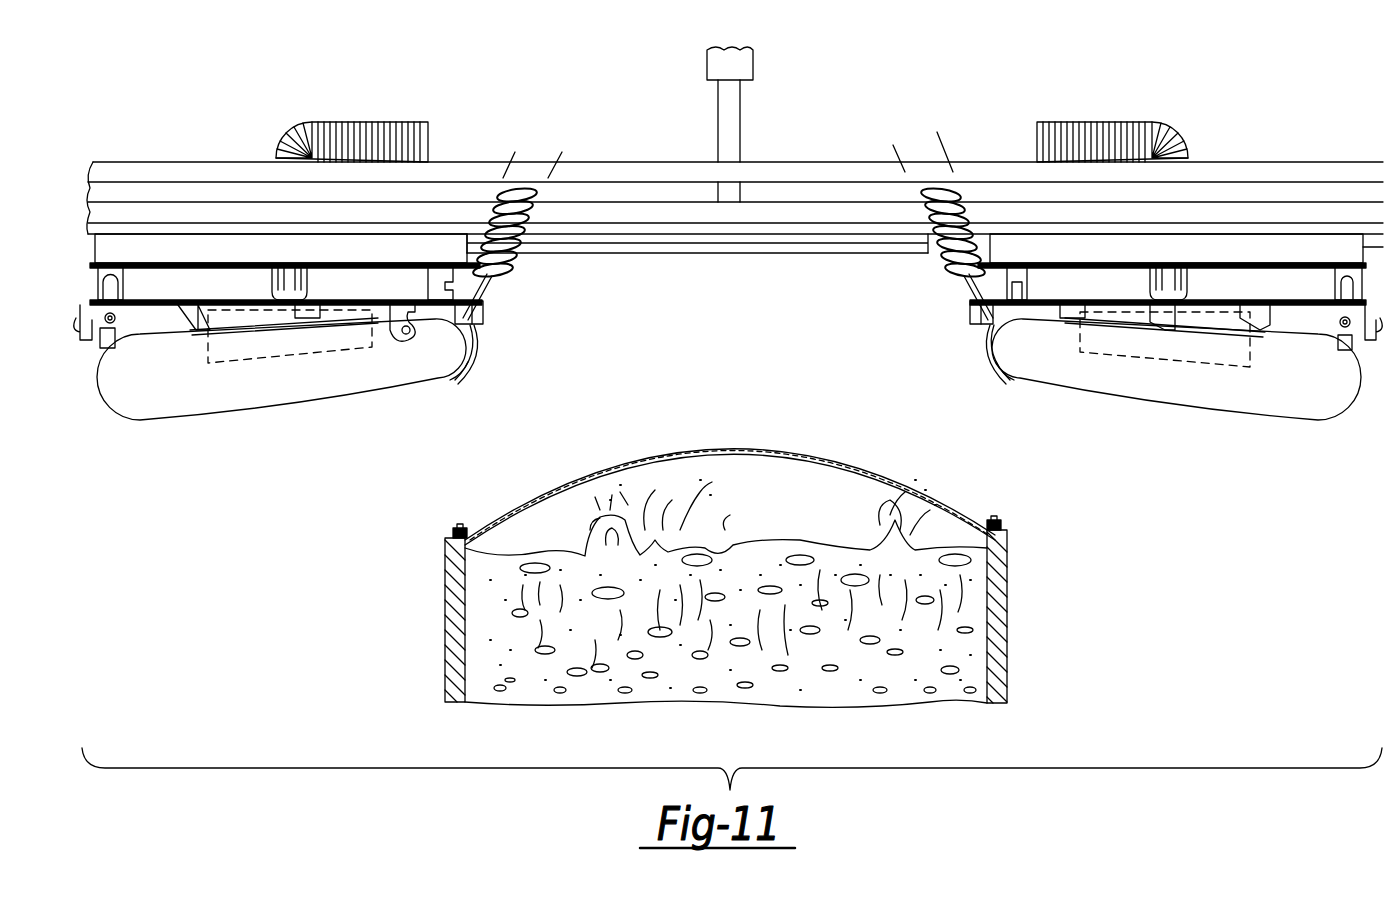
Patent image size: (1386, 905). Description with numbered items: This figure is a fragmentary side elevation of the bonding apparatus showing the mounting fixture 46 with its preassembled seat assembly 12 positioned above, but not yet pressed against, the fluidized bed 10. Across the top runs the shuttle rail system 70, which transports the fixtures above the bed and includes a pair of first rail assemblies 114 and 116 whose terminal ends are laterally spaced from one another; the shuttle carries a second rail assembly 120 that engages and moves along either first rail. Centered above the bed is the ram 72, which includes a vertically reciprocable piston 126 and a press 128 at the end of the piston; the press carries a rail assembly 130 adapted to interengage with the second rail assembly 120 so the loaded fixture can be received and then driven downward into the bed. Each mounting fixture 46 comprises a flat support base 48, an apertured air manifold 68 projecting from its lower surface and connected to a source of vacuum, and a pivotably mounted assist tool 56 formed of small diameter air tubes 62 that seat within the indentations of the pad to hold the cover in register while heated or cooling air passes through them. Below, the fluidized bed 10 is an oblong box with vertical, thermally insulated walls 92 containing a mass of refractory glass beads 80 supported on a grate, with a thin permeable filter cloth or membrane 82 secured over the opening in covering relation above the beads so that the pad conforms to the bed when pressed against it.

The fluidized bed 10 is at (724, 575).
The seat assembly 12 is at (233, 418).
The mounting fixture 46 is at (492, 312).
The flat support base 48 is at (484, 297).
The assist tool 56 is at (460, 382).
The air tubes 62 is at (466, 360).
The apertured air manifold 68 is at (280, 340).
The shuttle rail system 70 is at (213, 160).
The ram 72 is at (727, 66).
The refractory glass beads 80 is at (490, 590).
The filter cloth or membrane 82 is at (470, 538).
The thermally insulated walls 92 is at (462, 665).
The first rail assembly 114 is at (152, 234).
The first rail assembly 116 is at (1367, 237).
The second rail assembly 120 is at (437, 250).
The piston 126 is at (730, 110).
The press 128 is at (818, 213).
The rail assembly 130 is at (720, 248).